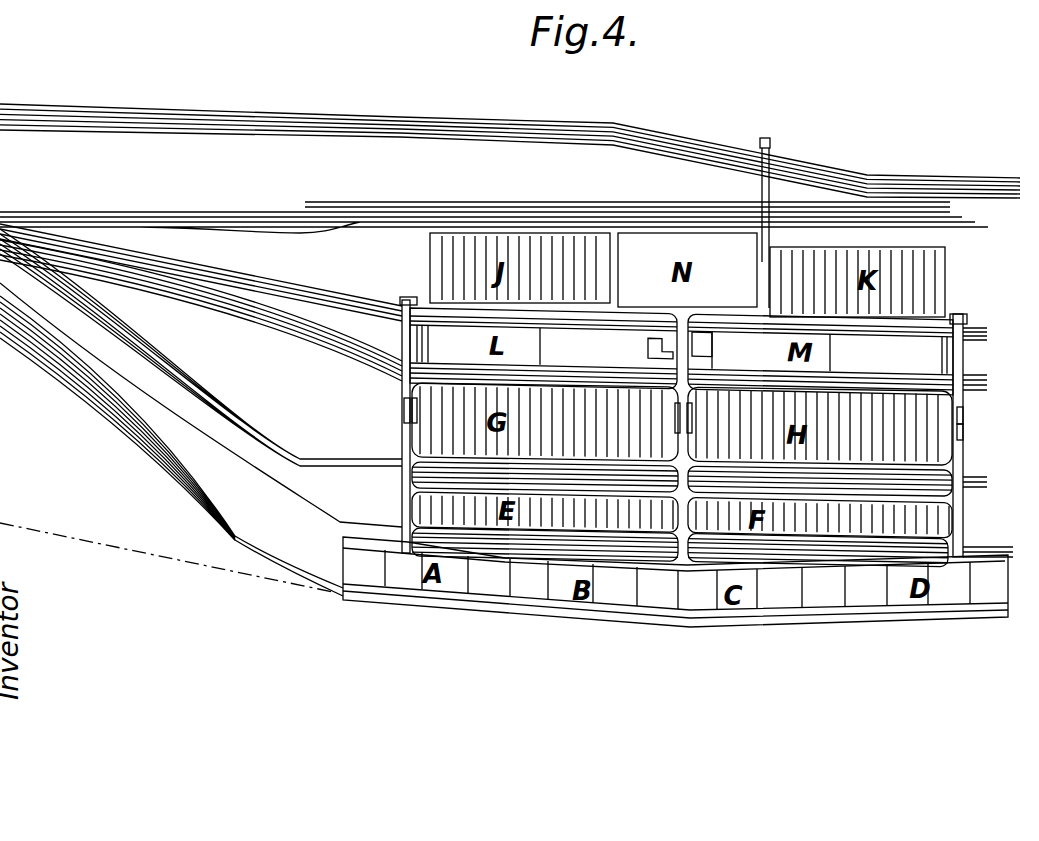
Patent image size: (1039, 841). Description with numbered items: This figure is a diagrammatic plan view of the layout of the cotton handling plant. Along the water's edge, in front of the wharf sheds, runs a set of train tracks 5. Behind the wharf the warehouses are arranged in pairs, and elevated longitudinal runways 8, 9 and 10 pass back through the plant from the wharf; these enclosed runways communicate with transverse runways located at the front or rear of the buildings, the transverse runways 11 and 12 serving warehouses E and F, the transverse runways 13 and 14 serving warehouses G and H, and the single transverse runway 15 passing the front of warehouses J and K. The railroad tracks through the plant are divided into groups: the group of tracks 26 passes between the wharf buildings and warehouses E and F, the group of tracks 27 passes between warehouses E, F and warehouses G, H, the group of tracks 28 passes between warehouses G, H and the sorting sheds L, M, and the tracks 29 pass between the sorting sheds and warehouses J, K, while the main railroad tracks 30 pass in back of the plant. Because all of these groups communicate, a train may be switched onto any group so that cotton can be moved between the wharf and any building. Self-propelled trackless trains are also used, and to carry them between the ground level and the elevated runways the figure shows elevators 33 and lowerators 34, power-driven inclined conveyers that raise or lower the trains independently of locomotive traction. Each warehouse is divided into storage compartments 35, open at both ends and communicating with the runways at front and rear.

The train tracks 5 is at (335, 590).
The longitudinal runway 8 is at (965, 356).
The longitudinal runway 9 is at (690, 356).
The longitudinal runway 10 is at (416, 342).
The transverse runway 11 is at (933, 526).
The transverse runway 12 is at (927, 490).
The transverse runway 13 is at (927, 462).
The transverse runway 14 is at (925, 388).
The transverse runway 15 is at (960, 309).
The group of railroad tracks 26 is at (390, 502).
The group of railroad tracks 27 is at (385, 470).
The group of railroad tracks 28 is at (394, 369).
The railroad tracks 29 is at (395, 318).
The main railroad tracks 30 is at (430, 214).
The elevator 33 is at (403, 405).
The lowerator 34 is at (412, 420).
The storage compartment 35 is at (907, 412).